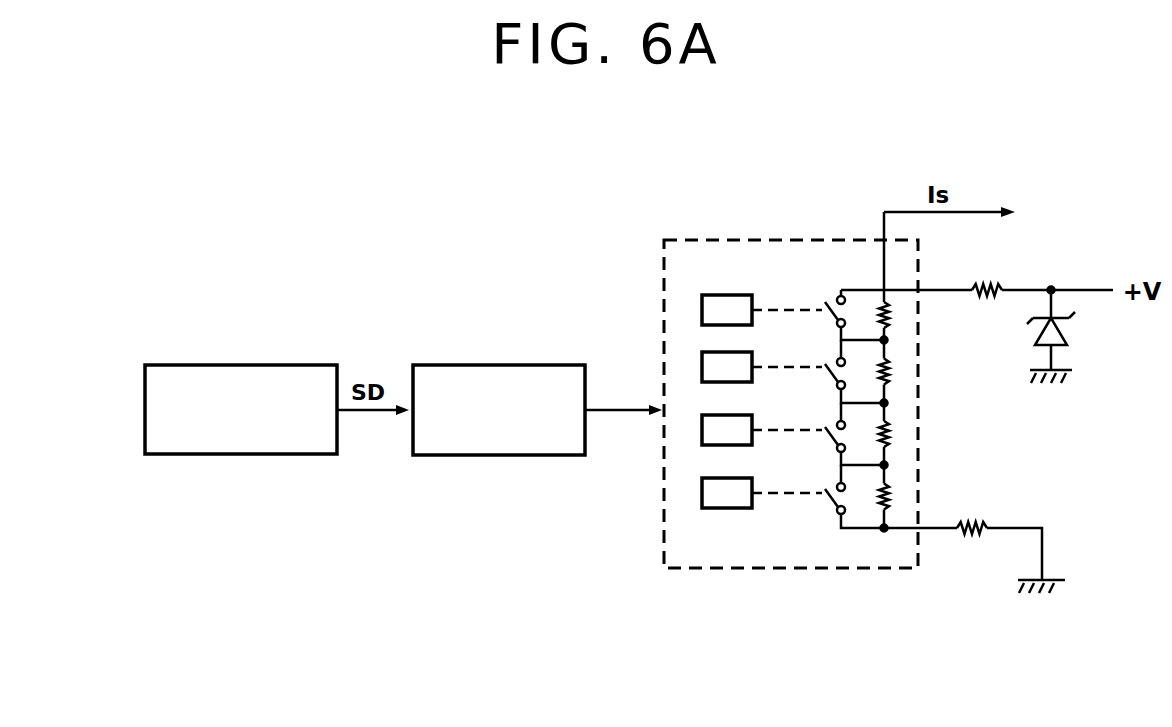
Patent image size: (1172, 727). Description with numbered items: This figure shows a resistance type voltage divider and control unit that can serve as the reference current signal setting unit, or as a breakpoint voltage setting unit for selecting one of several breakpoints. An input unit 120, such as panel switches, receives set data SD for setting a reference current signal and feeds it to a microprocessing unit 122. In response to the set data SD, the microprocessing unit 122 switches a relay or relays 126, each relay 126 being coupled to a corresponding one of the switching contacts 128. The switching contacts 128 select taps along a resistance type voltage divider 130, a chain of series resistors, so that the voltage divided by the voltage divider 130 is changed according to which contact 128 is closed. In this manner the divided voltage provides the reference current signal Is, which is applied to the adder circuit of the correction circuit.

The input unit 120 is at (228, 454).
The microprocessing unit (MPU) 122 is at (477, 455).
The relay 126 is at (728, 295).
The switching contacts 128 is at (826, 300).
The resistance type voltage divider 130 is at (892, 312).